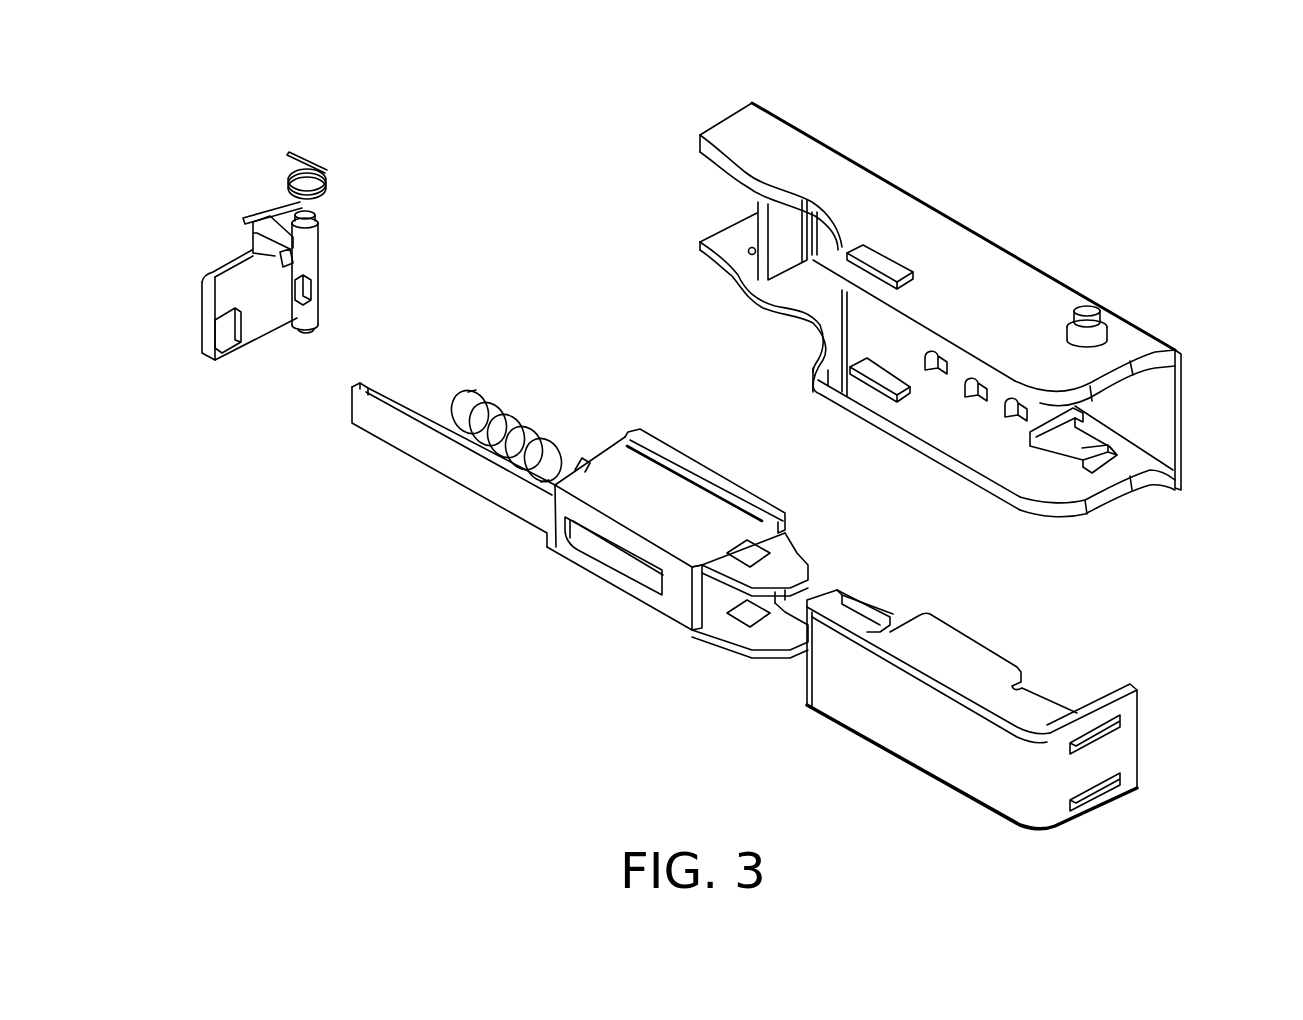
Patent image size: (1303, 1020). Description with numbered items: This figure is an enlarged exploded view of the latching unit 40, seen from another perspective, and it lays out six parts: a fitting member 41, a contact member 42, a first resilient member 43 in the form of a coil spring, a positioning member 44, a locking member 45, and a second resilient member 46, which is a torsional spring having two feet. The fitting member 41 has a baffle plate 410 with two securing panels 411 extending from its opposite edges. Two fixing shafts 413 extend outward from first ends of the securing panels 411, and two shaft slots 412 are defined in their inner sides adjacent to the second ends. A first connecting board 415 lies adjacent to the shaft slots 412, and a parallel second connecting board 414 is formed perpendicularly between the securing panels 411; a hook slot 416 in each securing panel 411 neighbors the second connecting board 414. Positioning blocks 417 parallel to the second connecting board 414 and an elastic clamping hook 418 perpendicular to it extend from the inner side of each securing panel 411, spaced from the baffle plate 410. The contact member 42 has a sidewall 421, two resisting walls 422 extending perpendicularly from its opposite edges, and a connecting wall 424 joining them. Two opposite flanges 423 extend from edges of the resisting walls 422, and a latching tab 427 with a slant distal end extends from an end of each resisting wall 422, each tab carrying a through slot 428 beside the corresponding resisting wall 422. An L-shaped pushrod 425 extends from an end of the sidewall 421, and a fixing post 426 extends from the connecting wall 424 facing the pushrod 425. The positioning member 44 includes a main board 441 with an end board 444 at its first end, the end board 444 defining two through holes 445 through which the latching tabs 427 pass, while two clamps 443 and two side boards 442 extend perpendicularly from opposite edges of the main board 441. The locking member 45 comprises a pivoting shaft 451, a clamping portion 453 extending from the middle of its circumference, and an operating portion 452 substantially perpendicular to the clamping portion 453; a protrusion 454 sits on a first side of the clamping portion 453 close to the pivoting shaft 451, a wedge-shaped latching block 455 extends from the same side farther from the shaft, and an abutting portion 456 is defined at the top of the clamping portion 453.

The latching unit 40 is at (1118, 128).
The fitting member 41 is at (1150, 503).
The baffle plate 410 is at (1153, 423).
The securing panels 411 is at (992, 266).
The shaft slots 412 is at (752, 250).
The fixing shafts 413 is at (1087, 318).
The second connecting board 414 is at (865, 323).
The first connecting board 415 is at (770, 262).
The hook slot 416 is at (884, 262).
The positioning blocks 417 is at (975, 400).
The elastic clamping hook 418 is at (1075, 455).
The contact member 42 is at (520, 543).
The sidewall 421 is at (673, 598).
The resisting walls 422 is at (643, 487).
The flanges 423 is at (717, 484).
The connecting wall 424 is at (580, 528).
The L-shaped pushrod 425 is at (428, 452).
The fixing post 426 is at (585, 465).
The latching tab 427 is at (778, 640).
The through slots 428 is at (745, 618).
The first resilient member 43 is at (492, 395).
The positioning member 44 is at (1143, 679).
The main board 441 is at (920, 745).
The side boards 442 is at (960, 652).
The clamps 443 is at (850, 600).
The end board 444 is at (1122, 750).
The through holes 445 is at (1095, 795).
The locking member 45 is at (200, 278).
The pivoting shaft 451 is at (318, 247).
The operating portion 452 is at (262, 233).
The clamping portion 453 is at (262, 320).
The protrusion 454 is at (310, 292).
The wedge-shaped latching block 455 is at (225, 330).
The abutting portion 456 is at (300, 255).
The second resilient member 46 is at (320, 175).